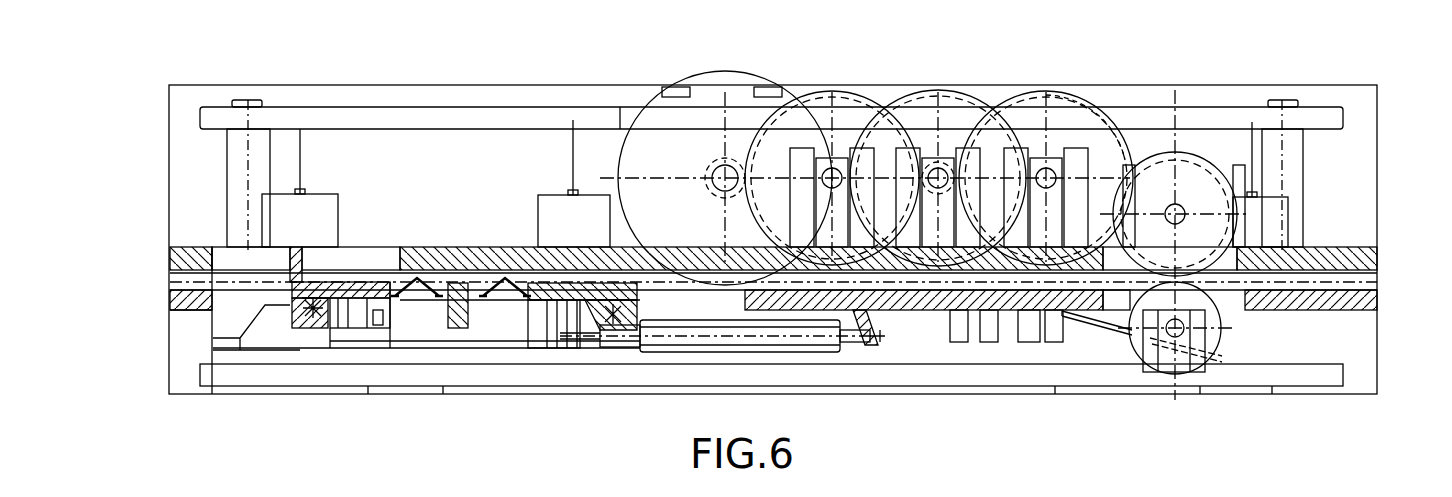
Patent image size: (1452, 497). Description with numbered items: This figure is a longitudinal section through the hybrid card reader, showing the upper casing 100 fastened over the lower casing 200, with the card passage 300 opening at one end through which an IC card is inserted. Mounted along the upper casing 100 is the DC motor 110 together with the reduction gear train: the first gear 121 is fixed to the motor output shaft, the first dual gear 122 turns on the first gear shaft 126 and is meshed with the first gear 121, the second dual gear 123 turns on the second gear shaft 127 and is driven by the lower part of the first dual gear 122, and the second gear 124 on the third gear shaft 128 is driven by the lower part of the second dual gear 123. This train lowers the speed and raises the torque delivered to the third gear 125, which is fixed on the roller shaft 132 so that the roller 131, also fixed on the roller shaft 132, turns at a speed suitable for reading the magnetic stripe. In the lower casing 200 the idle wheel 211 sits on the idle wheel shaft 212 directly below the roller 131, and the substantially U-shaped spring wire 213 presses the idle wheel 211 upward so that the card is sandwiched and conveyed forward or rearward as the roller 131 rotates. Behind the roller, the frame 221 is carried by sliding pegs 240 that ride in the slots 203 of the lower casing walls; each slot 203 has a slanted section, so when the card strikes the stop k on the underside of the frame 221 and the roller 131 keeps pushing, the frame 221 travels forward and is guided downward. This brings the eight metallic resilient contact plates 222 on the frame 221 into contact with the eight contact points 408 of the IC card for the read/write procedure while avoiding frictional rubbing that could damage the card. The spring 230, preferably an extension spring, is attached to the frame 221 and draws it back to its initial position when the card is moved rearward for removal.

The upper casing 100 is at (178, 172).
The DC motor 110 is at (617, 152).
The stop k is at (292, 247).
The first gear 121 is at (708, 172).
The first dual gear 122 is at (812, 165).
The second dual gear 123 is at (930, 168).
The second gear 124 is at (1040, 105).
The third gear 125 is at (1185, 200).
The first gear shaft 126 is at (822, 100).
The second gear shaft 127 is at (942, 165).
The third gear shaft 128 is at (1100, 158).
The roller 131 is at (1092, 85).
The roller shaft 132 is at (1190, 208).
The lower casing 200 is at (175, 345).
The slot 203 is at (215, 345).
The idle wheel 211 is at (1140, 360).
The idle wheel shaft 212 is at (1186, 337).
The spring wire 213 is at (1093, 322).
The frame 221 is at (296, 350).
The resilient contact plate 222 is at (397, 280).
The spring 230 is at (810, 352).
The sliding peg 240 is at (318, 335).
The card passage 300 is at (1380, 282).
The contact point 408 is at (460, 283).